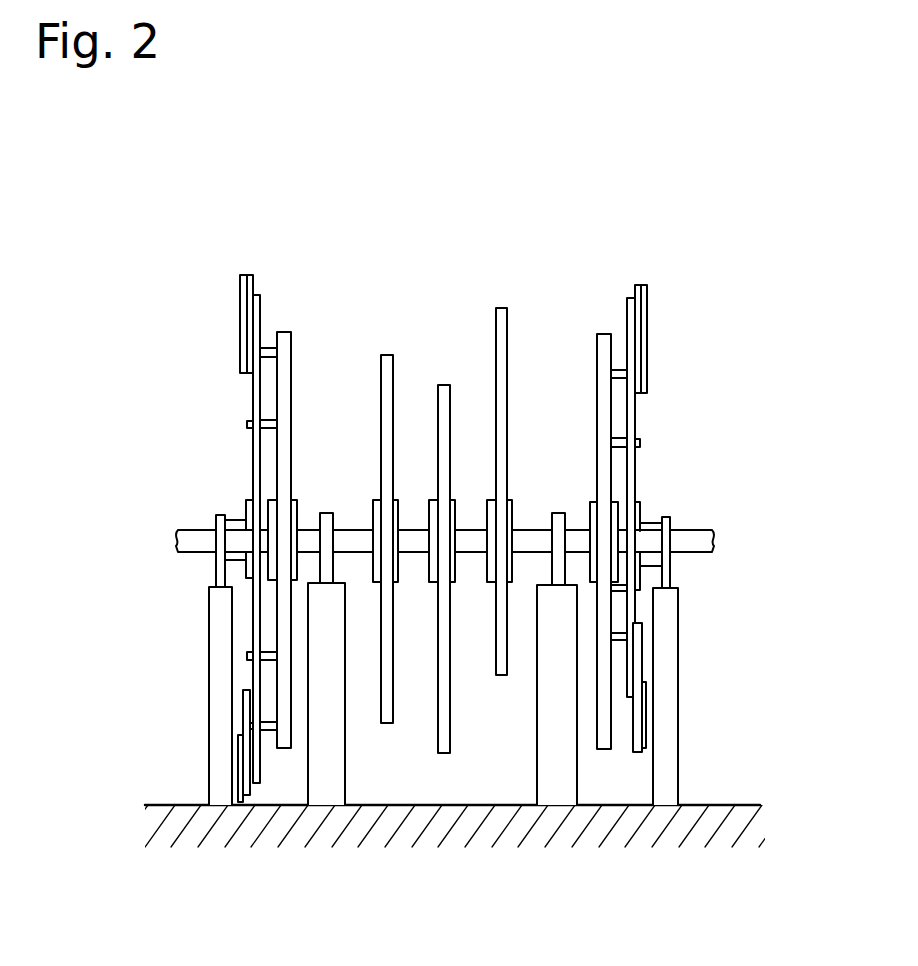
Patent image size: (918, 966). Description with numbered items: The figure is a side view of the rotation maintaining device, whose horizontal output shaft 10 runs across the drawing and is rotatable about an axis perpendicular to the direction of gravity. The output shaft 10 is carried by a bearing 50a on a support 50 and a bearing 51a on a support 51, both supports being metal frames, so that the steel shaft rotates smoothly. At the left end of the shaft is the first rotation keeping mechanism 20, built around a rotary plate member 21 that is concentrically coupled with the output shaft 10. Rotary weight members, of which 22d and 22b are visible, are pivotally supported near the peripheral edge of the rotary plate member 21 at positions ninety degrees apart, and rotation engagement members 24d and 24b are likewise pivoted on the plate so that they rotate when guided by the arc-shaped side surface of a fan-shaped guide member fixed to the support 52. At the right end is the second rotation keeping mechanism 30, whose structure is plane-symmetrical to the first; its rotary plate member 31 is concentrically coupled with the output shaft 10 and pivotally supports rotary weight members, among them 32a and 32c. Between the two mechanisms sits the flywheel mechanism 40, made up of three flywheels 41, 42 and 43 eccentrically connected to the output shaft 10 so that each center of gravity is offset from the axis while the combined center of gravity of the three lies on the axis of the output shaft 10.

The output shaft 10 is at (193, 538).
The first rotation keeping mechanism 20 is at (215, 540).
The rotary plate member 21 is at (284, 332).
The rotary weight member 22d is at (222, 343).
The rotary weight member 22b is at (272, 797).
The rotation engagement member 24d is at (253, 421).
The rotation engagement member 24b is at (246, 646).
The second rotation keeping mechanism 30 is at (666, 550).
The rotary plate member 31 is at (604, 334).
The rotary weight member 32a is at (661, 350).
The rotary weight member 32c is at (624, 764).
The flywheel mechanism 40 is at (433, 579).
The flywheel 41 is at (387, 355).
The flywheel 42 is at (444, 385).
The flywheel 43 is at (501, 308).
The support 50 is at (334, 663).
The bearing 50a is at (327, 513).
The support 51 is at (554, 668).
The bearing 51a is at (558, 513).
The support 52 is at (218, 800).